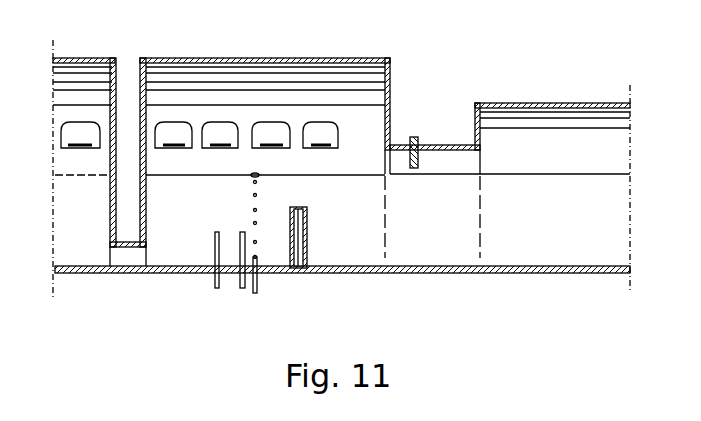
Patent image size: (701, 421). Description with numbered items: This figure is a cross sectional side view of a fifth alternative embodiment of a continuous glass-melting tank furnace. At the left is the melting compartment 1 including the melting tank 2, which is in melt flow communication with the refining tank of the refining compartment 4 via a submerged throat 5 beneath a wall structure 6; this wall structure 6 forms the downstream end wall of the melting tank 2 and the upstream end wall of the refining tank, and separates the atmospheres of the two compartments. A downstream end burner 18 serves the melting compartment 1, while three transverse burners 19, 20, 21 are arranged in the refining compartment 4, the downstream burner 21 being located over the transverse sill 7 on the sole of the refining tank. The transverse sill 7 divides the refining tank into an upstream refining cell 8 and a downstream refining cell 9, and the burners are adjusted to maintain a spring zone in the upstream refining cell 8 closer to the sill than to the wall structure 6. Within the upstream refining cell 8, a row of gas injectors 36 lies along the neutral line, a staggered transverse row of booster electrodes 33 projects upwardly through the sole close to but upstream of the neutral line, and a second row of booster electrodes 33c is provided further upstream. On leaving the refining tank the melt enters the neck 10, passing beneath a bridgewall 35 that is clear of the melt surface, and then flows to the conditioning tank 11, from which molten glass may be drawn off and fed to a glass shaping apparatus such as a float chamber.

The melting compartment 1 is at (88, 54).
The melting tank 2 is at (90, 224).
The refining compartment 4 is at (394, 56).
The submerged throat 5 is at (133, 265).
The wall structure 6 is at (140, 78).
The transverse sill 7 is at (307, 209).
The upstream refining cell 8 is at (192, 229).
The downstream refining cell 9 is at (362, 231).
The neck 10 is at (438, 232).
The conditioning tank 11 is at (567, 232).
The downstream end burner 18 is at (80, 135).
The transverse burner 19 is at (173, 135).
The transverse burner 20 is at (246, 135).
The downstream transverse burner 21 is at (320, 135).
The booster electrodes 33 is at (240, 286).
The second row of booster electrodes 33c is at (213, 286).
The bridgewall 35 is at (417, 137).
The gas injectors 36 is at (256, 294).